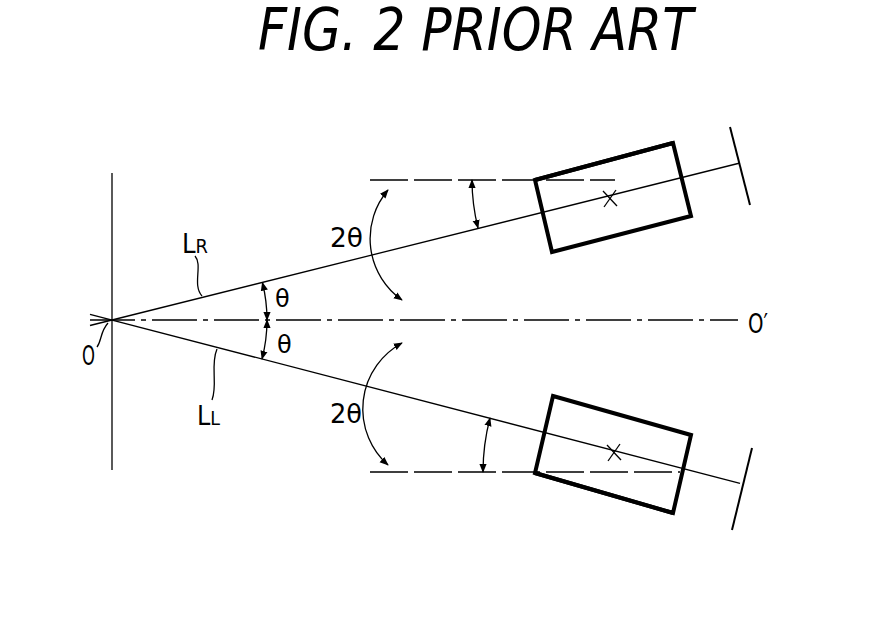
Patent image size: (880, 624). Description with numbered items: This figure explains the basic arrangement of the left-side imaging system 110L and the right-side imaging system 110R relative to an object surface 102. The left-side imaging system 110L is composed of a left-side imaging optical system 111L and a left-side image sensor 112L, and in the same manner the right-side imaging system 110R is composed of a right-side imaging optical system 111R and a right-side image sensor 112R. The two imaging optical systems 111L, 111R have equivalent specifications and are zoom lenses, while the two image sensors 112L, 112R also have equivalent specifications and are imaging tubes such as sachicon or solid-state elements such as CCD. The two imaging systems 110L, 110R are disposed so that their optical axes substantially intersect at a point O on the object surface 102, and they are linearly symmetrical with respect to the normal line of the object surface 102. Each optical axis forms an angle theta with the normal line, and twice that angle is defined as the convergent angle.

The object surface 102 is at (110, 207).
The right-side imaging system 110R is at (628, 151).
The left-side imaging system 110L is at (622, 502).
The right-side imaging optical system 111R is at (556, 173).
The left-side imaging optical system 111L is at (553, 481).
The right-side image sensor 112R is at (734, 141).
The left-side image sensor 112L is at (740, 504).